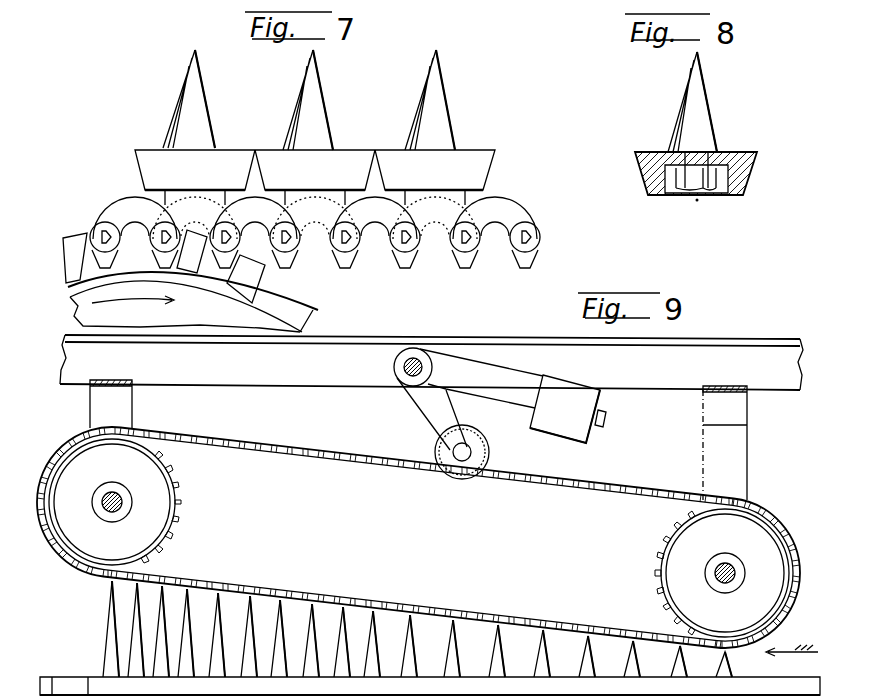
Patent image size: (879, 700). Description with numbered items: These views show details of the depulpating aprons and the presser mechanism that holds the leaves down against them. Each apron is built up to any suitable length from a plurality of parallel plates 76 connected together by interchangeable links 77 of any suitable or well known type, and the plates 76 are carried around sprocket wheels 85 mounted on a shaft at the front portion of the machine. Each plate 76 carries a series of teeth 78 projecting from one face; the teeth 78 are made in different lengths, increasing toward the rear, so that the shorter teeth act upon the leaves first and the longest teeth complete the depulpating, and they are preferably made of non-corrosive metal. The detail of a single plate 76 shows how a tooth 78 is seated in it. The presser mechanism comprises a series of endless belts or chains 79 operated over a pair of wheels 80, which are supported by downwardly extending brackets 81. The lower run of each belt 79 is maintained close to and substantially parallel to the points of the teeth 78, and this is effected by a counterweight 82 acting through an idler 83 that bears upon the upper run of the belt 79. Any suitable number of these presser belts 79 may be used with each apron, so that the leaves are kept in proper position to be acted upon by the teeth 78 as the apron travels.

In FIG. 7, the plate 76 is at (482, 178).
In FIG. 8, the plate 76 is at (742, 176).
In FIG. 7, the link 77 is at (500, 210).
In FIG. 7, the tooth 78 is at (433, 118).
In FIG. 8, the tooth 78 is at (702, 128).
In FIG. 9, the endless belt 79 is at (274, 601).
In FIG. 9, the wheel 80 is at (160, 497).
In FIG. 9, the bracket 81 is at (120, 411).
In FIG. 9, the counterweight 82 is at (547, 425).
In FIG. 9, the idler 83 is at (448, 462).
In FIG. 7, the sprocket wheel 85 is at (262, 282).